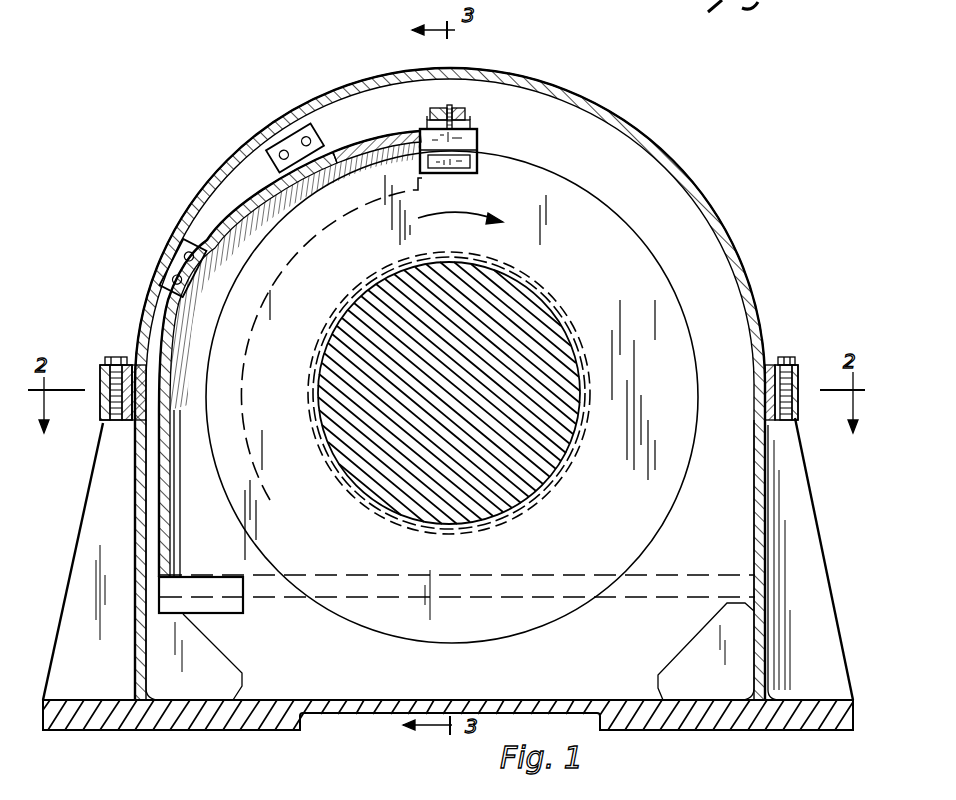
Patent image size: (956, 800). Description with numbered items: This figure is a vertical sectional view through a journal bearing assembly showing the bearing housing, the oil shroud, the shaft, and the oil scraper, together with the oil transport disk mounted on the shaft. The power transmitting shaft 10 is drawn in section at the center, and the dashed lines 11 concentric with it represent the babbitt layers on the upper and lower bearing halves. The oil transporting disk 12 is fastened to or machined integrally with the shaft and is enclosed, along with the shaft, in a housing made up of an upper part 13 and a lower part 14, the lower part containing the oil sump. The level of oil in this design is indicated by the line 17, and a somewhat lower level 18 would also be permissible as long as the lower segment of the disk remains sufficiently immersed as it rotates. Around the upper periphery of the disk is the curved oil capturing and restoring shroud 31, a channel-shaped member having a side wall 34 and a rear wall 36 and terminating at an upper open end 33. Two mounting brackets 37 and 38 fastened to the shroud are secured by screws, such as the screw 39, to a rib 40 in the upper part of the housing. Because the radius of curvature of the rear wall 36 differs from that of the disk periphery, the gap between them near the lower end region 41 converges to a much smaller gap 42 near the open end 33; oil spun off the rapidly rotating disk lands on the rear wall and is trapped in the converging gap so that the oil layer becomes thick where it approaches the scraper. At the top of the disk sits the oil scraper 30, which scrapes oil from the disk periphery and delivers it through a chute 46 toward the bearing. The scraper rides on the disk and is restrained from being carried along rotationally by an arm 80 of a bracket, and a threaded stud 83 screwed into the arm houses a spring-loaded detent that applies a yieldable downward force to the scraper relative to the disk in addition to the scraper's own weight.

The power transmitting shaft 10 is at (540, 340).
The dashed lines 11 is at (555, 290).
The oil transporting disk 12 is at (595, 195).
The upper part of housing 13 is at (708, 204).
The lower part of housing 14 is at (767, 499).
The oil level line 17 is at (683, 573).
The lower oil level 18 is at (682, 600).
The oil scraper 30 is at (482, 126).
The oil capturing and restoring shroud 31 is at (159, 508).
The upper open end of shroud 33 is at (412, 132).
The side wall of shroud 34 is at (203, 558).
The rear wall of shroud 36 is at (240, 208).
The mounting bracket 37 is at (170, 258).
The mounting bracket 38 is at (288, 136).
The screw 39 is at (278, 153).
The rib 40 is at (332, 97).
The lower end region of shroud 41 is at (174, 463).
The converging gap 42 is at (367, 143).
The chute 46 is at (477, 158).
The arm 80 is at (466, 110).
The threaded stud 83 is at (453, 106).